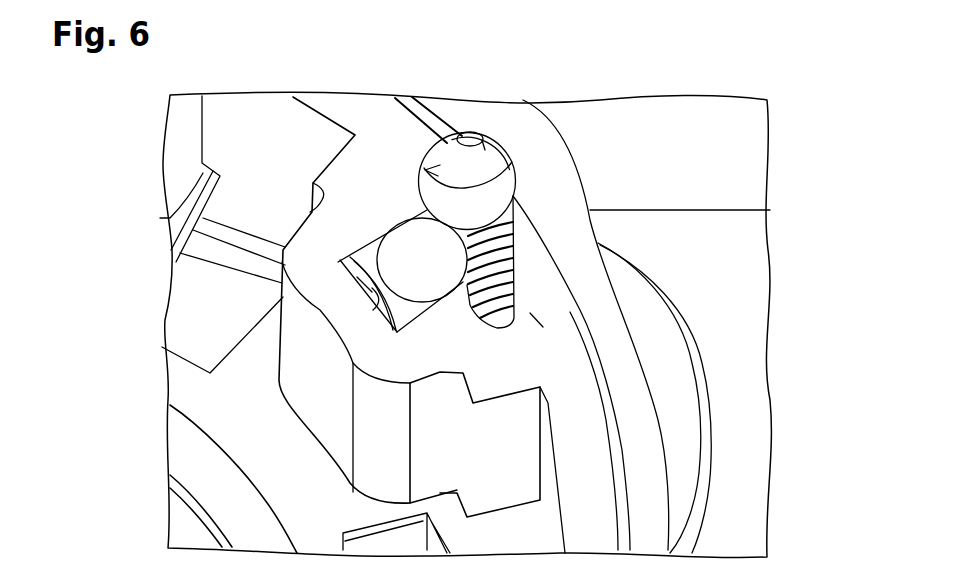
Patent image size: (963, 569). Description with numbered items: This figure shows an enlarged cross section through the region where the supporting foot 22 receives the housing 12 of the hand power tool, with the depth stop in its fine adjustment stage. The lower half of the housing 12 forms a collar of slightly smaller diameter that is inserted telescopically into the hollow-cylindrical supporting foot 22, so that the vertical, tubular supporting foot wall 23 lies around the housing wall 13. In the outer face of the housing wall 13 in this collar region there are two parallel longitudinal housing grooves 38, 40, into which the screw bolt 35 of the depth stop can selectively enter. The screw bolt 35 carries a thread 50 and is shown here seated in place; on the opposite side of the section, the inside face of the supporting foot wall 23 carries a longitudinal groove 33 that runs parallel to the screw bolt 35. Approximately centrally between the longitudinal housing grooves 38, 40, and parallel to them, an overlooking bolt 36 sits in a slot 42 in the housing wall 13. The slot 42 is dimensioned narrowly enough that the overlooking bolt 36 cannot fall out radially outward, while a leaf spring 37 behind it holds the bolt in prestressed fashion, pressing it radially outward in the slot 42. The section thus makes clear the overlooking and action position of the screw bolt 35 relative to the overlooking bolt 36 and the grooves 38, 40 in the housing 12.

The housing 12 is at (662, 488).
The housing wall 13 is at (655, 522).
The supporting foot 22 is at (722, 443).
The supporting foot wall 23 is at (495, 113).
The longitudinal groove 33 is at (463, 132).
The screw bolt 35 is at (493, 195).
The overlooking bolt 36 is at (443, 263).
The leaf spring 37 is at (350, 272).
The first longitudinal housing groove 38 is at (500, 163).
The second longitudinal housing groove 40 is at (540, 327).
The slot 42 is at (283, 305).
The thread 50 is at (498, 248).